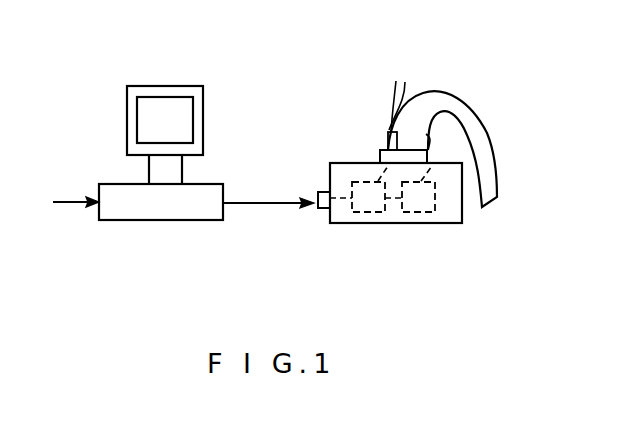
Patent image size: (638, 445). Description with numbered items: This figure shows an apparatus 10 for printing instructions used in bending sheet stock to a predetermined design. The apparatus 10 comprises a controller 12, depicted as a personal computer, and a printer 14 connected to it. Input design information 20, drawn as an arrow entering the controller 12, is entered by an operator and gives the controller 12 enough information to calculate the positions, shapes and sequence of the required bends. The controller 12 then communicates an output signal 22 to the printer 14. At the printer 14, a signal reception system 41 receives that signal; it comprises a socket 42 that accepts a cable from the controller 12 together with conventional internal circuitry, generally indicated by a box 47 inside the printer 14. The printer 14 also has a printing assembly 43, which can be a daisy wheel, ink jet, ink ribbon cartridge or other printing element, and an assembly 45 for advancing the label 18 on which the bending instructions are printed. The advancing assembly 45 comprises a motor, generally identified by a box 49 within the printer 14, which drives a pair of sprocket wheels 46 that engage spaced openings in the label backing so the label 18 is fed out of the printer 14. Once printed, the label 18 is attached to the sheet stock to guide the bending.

The apparatus 10 is at (262, 118).
The controller 12 is at (115, 184).
The printer 14 is at (462, 217).
The label 18 is at (489, 145).
The input design information 20 is at (83, 207).
The output signal 22 is at (258, 197).
The signal reception system 41 is at (315, 177).
The socket 42 is at (320, 209).
The printing assembly 43 is at (378, 150).
The assembly for advancing the label 45 is at (428, 135).
The sprocket wheels 46 is at (402, 92).
The internal circuitry 47 is at (387, 214).
The motor 49 is at (440, 213).